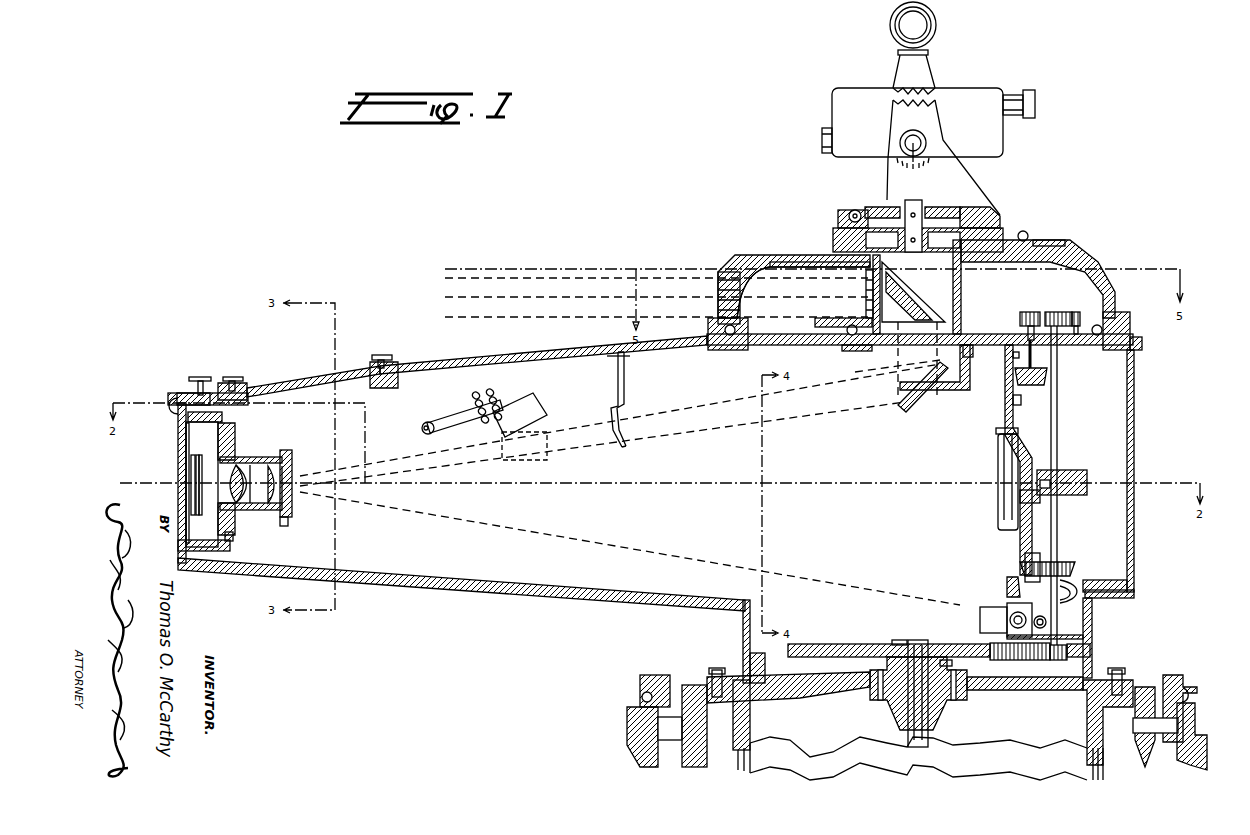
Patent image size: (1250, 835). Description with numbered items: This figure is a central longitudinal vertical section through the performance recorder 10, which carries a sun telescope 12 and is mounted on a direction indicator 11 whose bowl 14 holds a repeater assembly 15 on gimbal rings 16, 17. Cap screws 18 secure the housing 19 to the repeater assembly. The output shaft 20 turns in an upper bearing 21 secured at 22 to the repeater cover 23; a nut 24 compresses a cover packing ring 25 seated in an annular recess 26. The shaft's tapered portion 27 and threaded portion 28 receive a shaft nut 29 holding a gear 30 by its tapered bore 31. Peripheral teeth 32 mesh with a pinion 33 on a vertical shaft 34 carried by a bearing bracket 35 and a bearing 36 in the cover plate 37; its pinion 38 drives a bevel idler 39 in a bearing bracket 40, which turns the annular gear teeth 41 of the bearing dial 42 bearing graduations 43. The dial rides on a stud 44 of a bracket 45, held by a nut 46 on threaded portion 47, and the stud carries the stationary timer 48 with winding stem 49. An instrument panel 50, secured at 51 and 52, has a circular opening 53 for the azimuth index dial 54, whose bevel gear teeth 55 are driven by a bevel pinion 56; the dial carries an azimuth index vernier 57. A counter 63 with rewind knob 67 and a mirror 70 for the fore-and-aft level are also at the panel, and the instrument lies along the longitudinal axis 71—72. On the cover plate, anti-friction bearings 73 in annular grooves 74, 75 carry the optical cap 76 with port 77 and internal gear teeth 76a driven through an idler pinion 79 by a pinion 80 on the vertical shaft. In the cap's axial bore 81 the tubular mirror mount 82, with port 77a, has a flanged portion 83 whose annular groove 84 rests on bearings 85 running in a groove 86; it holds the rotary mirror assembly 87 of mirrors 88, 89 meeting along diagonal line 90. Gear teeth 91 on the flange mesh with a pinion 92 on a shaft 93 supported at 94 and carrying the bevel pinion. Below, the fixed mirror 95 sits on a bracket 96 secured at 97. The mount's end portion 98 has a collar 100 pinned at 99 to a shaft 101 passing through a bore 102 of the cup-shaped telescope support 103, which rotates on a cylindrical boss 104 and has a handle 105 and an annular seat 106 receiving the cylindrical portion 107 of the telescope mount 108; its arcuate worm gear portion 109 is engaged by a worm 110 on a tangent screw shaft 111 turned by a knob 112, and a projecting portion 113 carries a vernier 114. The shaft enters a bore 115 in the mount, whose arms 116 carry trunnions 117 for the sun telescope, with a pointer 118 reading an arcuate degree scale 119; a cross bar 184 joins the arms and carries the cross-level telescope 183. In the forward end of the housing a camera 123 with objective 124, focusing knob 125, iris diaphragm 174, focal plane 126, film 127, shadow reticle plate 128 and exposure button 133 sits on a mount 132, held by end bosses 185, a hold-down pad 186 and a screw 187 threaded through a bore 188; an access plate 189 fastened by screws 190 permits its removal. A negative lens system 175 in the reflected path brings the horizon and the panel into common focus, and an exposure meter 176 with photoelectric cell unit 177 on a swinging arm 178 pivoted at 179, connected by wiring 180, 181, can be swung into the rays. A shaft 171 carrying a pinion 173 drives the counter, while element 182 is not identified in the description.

The performance recorder 10 is at (421, 358).
The direction indicator 11 is at (625, 716).
The sun telescope 12 is at (1022, 132).
The bowl 14 is at (1207, 742).
The repeater assembly 15 is at (1112, 774).
The gimbal ring 16 is at (655, 675).
The gimbal ring 17 is at (690, 685).
The cap screws 18 is at (1120, 668).
The performance-recorder housing 19 is at (470, 594).
The output shaft 20 is at (930, 738).
The upper bearing 21 is at (905, 725).
The securing means 22 is at (872, 700).
The repeater cover 23 is at (815, 695).
The nut 24 is at (950, 665).
The cover packing ring 25 is at (955, 700).
The annular recess 26 is at (885, 700).
The tapered portion 27 is at (940, 645).
The threaded portion 28 is at (916, 640).
The shaft nut 29 is at (900, 640).
The gear 30 is at (812, 655).
The tapered bore 31 is at (875, 658).
The peripheral teeth 32 is at (1010, 657).
The pinion 33 is at (1055, 660).
The vertical shaft 34 is at (1058, 446).
The bearing bracket 35 is at (1095, 590).
The bearing 36 is at (1062, 345).
The cover plate 37 is at (520, 352).
The pinion 38 is at (1065, 568).
The bevel idler 39 is at (1010, 553).
The bearing bracket 40 is at (1075, 590).
The annular gear teeth 41 is at (1018, 402).
The bearing dial 42 is at (1010, 566).
The graduations 43 is at (1010, 418).
The stud 44 is at (1040, 492).
The bracket 45 is at (1087, 478).
The nut 46 is at (1060, 490).
The threaded portion 47 is at (1030, 455).
The timer 48 is at (987, 504).
The winding stem 49 is at (998, 436).
The instrument panel 50 is at (1008, 370).
The securing means 51 is at (1085, 638).
The securing means 52 is at (1008, 355).
The circular opening 53 is at (1010, 382).
The azimuth index dial 54 is at (1010, 395).
The bevel gear teeth 55 is at (1007, 592).
The bevel pinion 56 is at (1050, 380).
The azimuth index vernier 57 is at (1007, 582).
The counter 63 is at (1007, 612).
The rewind knob 67 is at (1010, 615).
The forty-five degree mirror 70 is at (980, 615).
The longitudinal axis 71 is at (158, 483).
The longitudinal axis 72 is at (1163, 483).
The anti-friction bearings 73 is at (707, 330).
The annular groove 74 is at (730, 346).
The annular groove 75 is at (742, 290).
The optical cap 76 is at (1098, 262).
The internal gear teeth 76a is at (760, 285).
The port 77 is at (722, 270).
The port 77a is at (866, 295).
The idler pinion 79 is at (1075, 312).
The pinion 80 is at (1053, 312).
The axial bore 81 is at (840, 268).
The tubular mirror mount 82 is at (962, 305).
The flanged portion 83 is at (818, 320).
The annular groove 84 is at (850, 320).
The anti-friction bearings 85 is at (840, 346).
The annular groove 86 is at (858, 351).
The rotary mirror assembly 87 is at (899, 272).
The mirror 88 is at (905, 320).
The mirror 89 is at (930, 312).
The diagonal line 90 is at (915, 292).
The gear teeth 91 is at (815, 323).
The pinion 92 is at (1025, 312).
The shaft 93 is at (1019, 358).
The rotatable support 94 is at (1032, 312).
The fixed mirror 95 is at (905, 408).
The bracket 96 is at (945, 390).
The securing means 97 is at (962, 348).
The end portion 98 is at (908, 293).
The pin 99 is at (944, 240).
The collar 100 is at (882, 240).
The shaft 101 is at (930, 210).
The bore 102 is at (935, 217).
The cup-shaped telescope support 103 is at (835, 229).
The cylindrical boss 104 is at (835, 240).
The handle 105 is at (840, 216).
The annular seat 106 is at (990, 230).
The cylindrical portion 107 is at (985, 225).
The telescope mount 108 is at (960, 222).
The arcuate worm gear portion 109 is at (868, 212).
The worm 110 is at (856, 212).
The tangent screw shaft 111 is at (850, 212).
The knob 112 is at (842, 212).
The outwardly projecting portion 113 is at (1028, 232).
The vernier 114 is at (1060, 242).
The bore 115 is at (876, 199).
The spaced arms 116 is at (968, 162).
The trunnions 117 is at (885, 200).
The pointer 118 is at (912, 160).
The arcuate degree scale 119 is at (932, 205).
The photographic camera 123 is at (240, 426).
The objective 124 is at (292, 470).
The focusing knob 125 is at (288, 524).
The focal plane 126 is at (192, 470).
The film 127 is at (200, 510).
The shadow reticle plate 128 is at (190, 445).
The mount 132 is at (205, 554).
The exposure button 133 is at (200, 460).
The shaft 171 is at (1045, 613).
The pinion 173 is at (1038, 612).
The iris diaphragm 174 is at (282, 488).
The negative lens system 175 is at (627, 444).
The exposure meter 176 is at (543, 395).
The photoelectric cell unit 177 is at (538, 405).
The offset swinging arm 178 is at (460, 419).
The pivot 179 is at (422, 429).
The wiring 180 is at (495, 390).
The wiring 181 is at (478, 393).
The housing 182 is at (772, 255).
The cross-level telescope 183 is at (936, 20).
The cross bar 184 is at (895, 50).
The U-shaped end bosses 185 is at (233, 540).
The hold-down pad 186 is at (217, 411).
The screw 187 is at (202, 377).
The bore 188 is at (190, 395).
The access plate 189 is at (345, 372).
The screws 190 is at (235, 376).